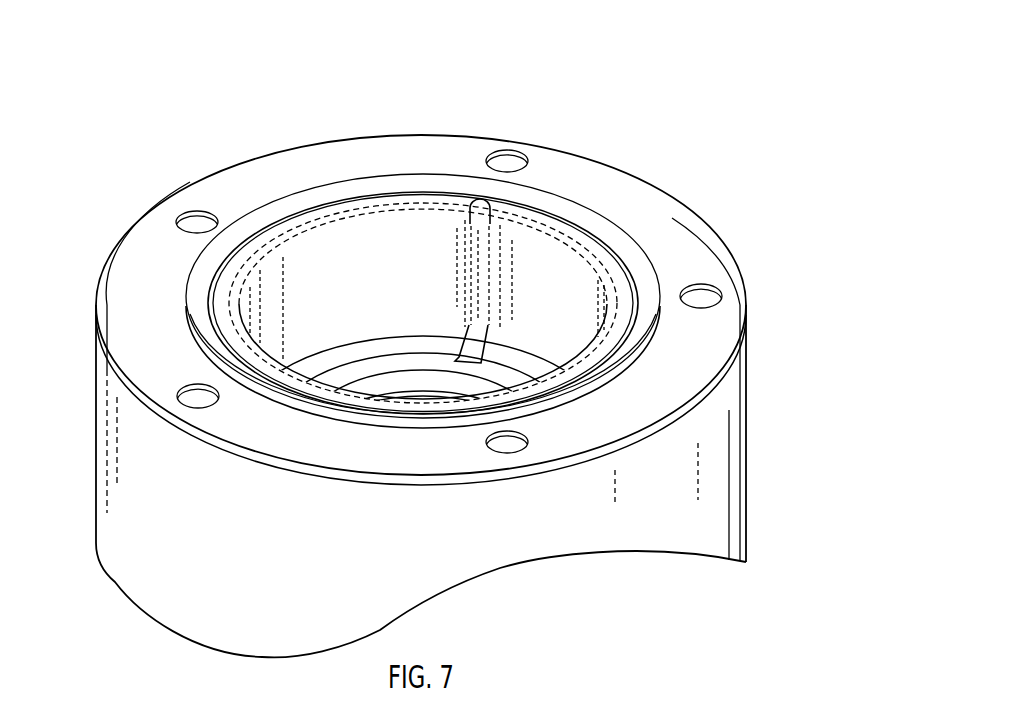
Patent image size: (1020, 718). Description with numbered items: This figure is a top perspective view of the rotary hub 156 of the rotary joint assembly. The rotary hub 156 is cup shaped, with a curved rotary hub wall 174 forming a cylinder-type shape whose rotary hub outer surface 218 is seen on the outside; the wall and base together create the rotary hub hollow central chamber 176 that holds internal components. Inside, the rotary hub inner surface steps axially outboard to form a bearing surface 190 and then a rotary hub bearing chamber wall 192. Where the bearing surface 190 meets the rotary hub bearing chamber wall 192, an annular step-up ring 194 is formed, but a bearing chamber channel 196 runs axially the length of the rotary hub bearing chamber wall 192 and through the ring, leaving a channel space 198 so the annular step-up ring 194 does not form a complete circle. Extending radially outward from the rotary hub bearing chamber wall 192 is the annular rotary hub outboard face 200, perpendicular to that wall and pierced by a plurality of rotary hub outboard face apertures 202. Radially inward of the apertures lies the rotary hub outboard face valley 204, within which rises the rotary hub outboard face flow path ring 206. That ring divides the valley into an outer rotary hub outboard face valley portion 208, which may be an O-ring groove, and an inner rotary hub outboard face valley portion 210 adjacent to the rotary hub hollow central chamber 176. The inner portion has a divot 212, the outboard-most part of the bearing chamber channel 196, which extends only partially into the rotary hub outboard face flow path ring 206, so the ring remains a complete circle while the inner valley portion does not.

The rotary hub 156 is at (588, 33).
The rotary hub wall 174 is at (748, 440).
The rotary hub hollow central chamber 176 is at (587, 283).
The bearing surface 190 is at (468, 351).
The rotary hub bearing chamber wall 192 is at (380, 283).
The annular step-up ring 194 is at (312, 378).
The bearing chamber channel 196 is at (490, 215).
The channel space 198 is at (470, 348).
The rotary hub outboard face 200 is at (368, 162).
The rotary hub outboard face apertures 202 is at (506, 157).
The rotary hub outboard face valley 204 is at (650, 305).
The rotary hub outboard face flow path ring 206 is at (600, 368).
The outer rotary hub outboard face valley portion 208 is at (641, 338).
The inner rotary hub outboard face valley portion 210 is at (290, 237).
The divot 212 is at (474, 203).
The rotary hub outer surface 218 is at (146, 578).